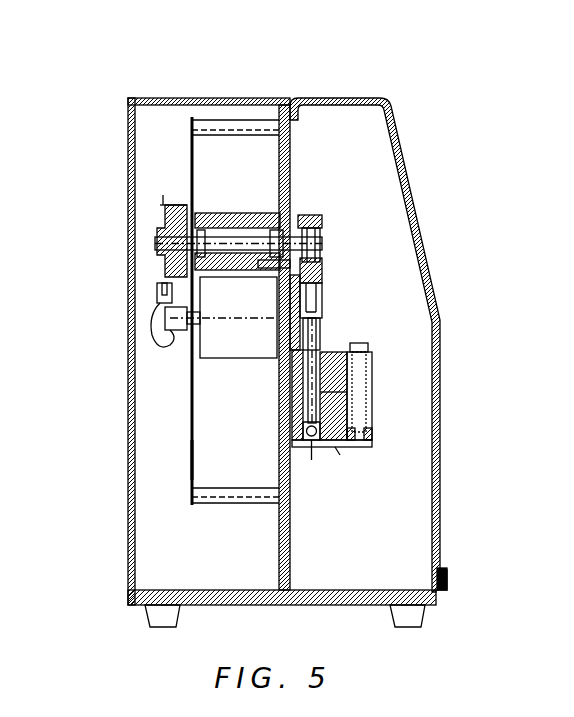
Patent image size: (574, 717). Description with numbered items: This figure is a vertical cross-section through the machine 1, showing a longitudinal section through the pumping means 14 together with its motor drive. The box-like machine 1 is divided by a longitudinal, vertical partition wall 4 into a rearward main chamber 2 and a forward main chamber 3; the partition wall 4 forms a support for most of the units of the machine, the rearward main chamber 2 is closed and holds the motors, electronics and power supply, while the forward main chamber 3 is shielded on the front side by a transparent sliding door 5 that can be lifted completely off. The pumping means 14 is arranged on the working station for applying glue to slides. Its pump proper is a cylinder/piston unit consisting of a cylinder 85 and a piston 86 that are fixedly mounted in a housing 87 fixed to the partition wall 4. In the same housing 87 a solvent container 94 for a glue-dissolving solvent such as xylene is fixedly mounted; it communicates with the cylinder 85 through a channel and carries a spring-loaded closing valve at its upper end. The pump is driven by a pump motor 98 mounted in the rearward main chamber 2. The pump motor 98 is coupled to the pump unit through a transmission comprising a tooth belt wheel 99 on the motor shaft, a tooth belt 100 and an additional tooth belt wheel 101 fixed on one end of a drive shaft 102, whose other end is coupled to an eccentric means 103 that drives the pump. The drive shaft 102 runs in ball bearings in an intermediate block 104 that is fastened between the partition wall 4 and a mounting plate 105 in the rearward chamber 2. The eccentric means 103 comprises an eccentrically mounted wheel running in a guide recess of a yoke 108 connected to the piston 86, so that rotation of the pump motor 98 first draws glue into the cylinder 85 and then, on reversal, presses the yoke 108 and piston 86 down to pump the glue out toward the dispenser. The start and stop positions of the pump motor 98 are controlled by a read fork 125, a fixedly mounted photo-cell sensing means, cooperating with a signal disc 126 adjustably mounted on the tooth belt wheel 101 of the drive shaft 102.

The machine 1 is at (260, 92).
The rearward main chamber 2 is at (178, 562).
The forward main chamber 3 is at (392, 559).
The partition wall 4 is at (292, 539).
The transparent sliding door 5 is at (406, 175).
The pumping means 14 is at (338, 338).
The cylinder 85 is at (290, 445).
The piston 86 is at (290, 356).
The housing 87 is at (338, 450).
The solvent container 94 is at (372, 409).
The pump motor 98 is at (218, 348).
The tooth belt wheel 99 is at (160, 340).
The tooth belt 100 is at (160, 288).
The additional tooth belt wheel 101 is at (173, 203).
The drive shaft 102 is at (228, 238).
The eccentric means 103 is at (325, 232).
The intermediate block 104 is at (256, 213).
The mounting plate 105 is at (195, 460).
The yoke 108 is at (322, 279).
The read fork 125 is at (155, 330).
The signal disc 126 is at (165, 205).